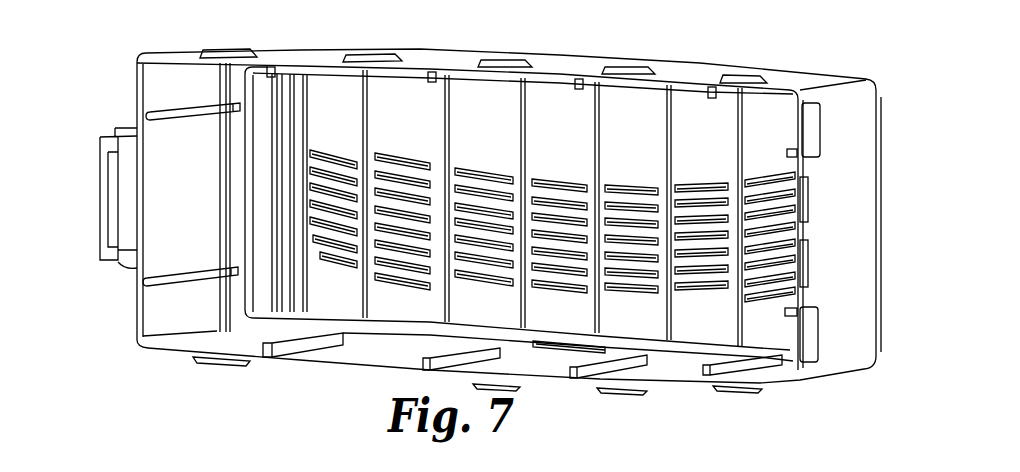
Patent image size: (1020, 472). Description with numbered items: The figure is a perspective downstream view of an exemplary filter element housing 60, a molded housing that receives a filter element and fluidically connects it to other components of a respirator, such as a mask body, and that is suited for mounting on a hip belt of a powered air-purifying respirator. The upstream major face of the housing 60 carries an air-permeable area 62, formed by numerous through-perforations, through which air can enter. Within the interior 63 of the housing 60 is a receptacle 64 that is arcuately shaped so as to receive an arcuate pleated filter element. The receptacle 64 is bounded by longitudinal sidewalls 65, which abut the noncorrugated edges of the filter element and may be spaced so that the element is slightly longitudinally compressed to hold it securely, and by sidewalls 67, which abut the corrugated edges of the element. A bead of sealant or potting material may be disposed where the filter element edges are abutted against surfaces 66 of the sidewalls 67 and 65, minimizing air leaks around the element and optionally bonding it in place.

The filter element housing 60 is at (805, 46).
The air-permeable area 62 is at (563, 185).
The interior 63 is at (645, 139).
The receptacle 64 is at (418, 100).
The sidewalls 65 is at (310, 72).
The surfaces 66 is at (327, 323).
The sidewalls 67 is at (507, 323).